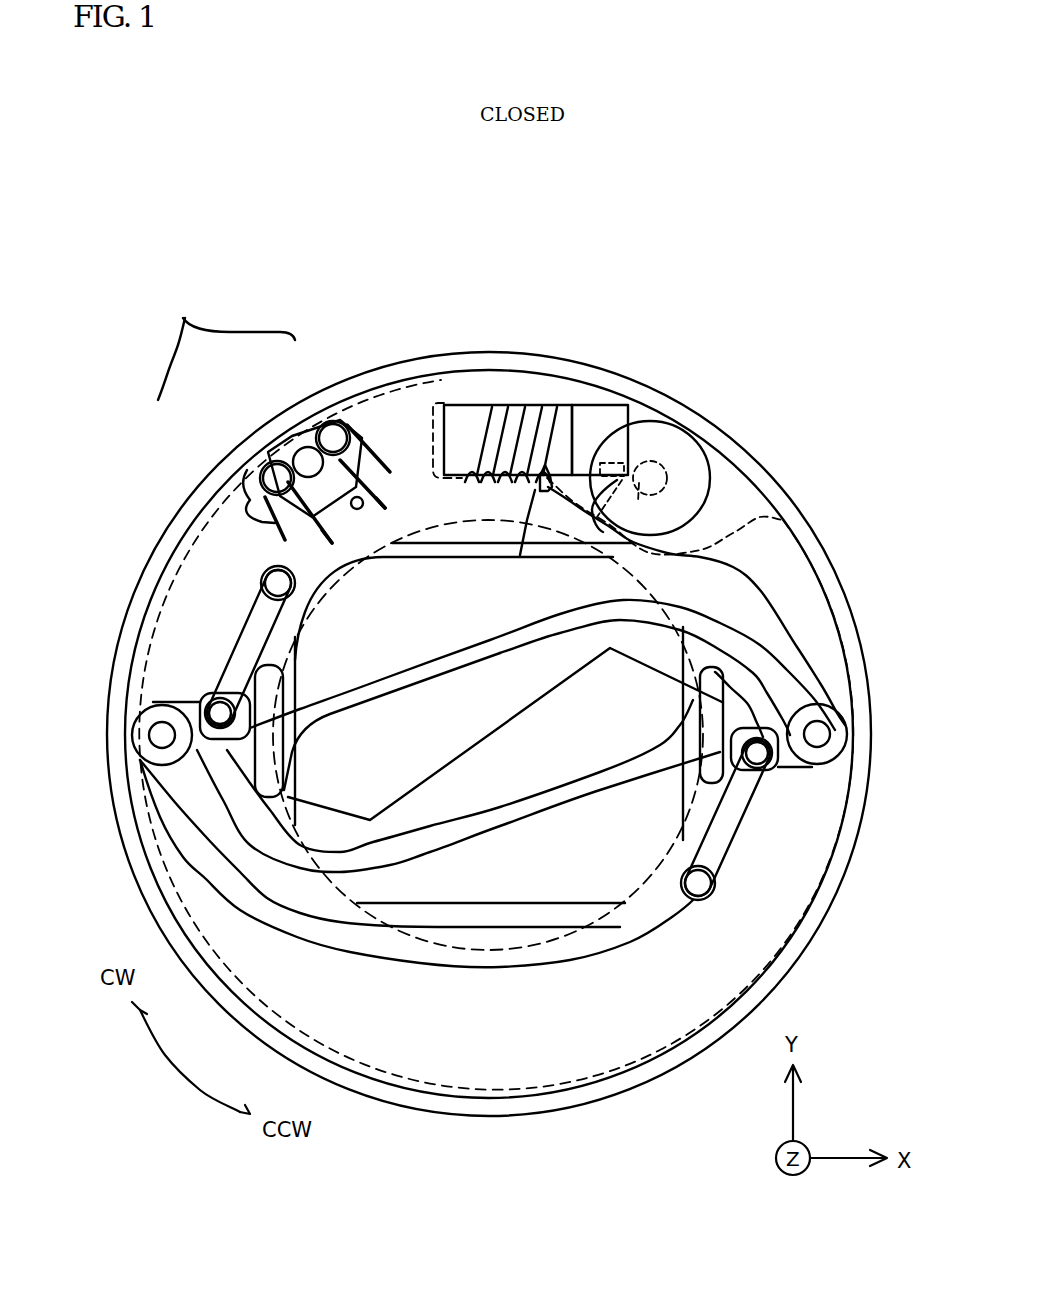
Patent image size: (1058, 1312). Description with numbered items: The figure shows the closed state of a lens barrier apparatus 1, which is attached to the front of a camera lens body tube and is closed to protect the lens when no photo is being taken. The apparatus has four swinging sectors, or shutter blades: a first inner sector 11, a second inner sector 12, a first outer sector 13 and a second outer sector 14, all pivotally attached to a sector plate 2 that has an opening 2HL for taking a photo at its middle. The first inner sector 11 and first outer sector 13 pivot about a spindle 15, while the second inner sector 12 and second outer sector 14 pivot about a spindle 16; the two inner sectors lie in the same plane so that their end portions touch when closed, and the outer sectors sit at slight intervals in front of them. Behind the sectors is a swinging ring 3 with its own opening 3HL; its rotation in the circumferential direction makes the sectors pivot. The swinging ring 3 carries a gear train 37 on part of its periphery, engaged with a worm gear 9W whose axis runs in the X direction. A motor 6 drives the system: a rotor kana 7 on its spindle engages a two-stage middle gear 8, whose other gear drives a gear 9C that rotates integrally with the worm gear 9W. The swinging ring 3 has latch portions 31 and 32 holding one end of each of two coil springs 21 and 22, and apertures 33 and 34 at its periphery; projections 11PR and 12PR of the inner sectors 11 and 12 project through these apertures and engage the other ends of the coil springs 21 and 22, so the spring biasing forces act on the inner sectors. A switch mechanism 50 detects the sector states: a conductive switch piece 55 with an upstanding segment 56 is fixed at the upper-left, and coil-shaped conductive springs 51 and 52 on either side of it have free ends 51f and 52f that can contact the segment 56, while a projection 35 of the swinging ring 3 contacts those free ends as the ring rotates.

The lens barrier apparatus 1 is at (370, 318).
The sector plate 2 is at (793, 517).
The swinging ring 3 is at (798, 590).
The motor 6 is at (700, 447).
The rotor kana 7 is at (668, 470).
The middle gear 8 is at (632, 505).
The worm gear 9W is at (467, 420).
The gear 9C is at (597, 418).
The first inner sector 11 is at (358, 830).
The second inner sector 12 is at (775, 677).
The first outer sector 13 is at (310, 910).
The second outer sector 14 is at (770, 617).
The spindle 15 is at (160, 735).
The spindle 16 is at (822, 738).
The coil spring 21 is at (243, 660).
The coil spring 22 is at (745, 800).
The latch portion 31 is at (265, 578).
The latch portion 32 is at (712, 895).
The aperture 33 is at (210, 700).
The aperture 34 is at (768, 760).
The projection 35 is at (362, 512).
The gear train 37 is at (525, 515).
The switch mechanism 50 is at (223, 408).
The conductive spring 51 is at (262, 490).
The free end 51f is at (327, 535).
The conductive spring 52 is at (387, 437).
The free end 52f is at (383, 497).
The switch piece 55 is at (296, 447).
The segment 56 is at (340, 500).
The projection 11PR is at (218, 710).
The projection 12PR is at (757, 753).
The opening 2HL is at (430, 558).
The opening 3HL is at (508, 968).